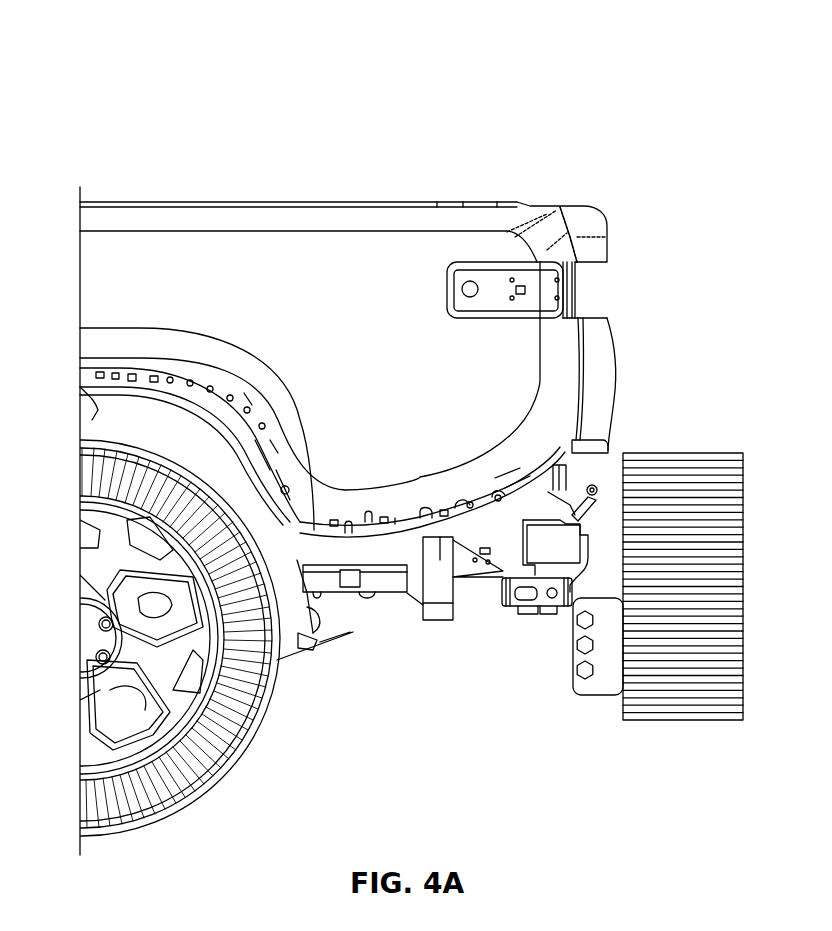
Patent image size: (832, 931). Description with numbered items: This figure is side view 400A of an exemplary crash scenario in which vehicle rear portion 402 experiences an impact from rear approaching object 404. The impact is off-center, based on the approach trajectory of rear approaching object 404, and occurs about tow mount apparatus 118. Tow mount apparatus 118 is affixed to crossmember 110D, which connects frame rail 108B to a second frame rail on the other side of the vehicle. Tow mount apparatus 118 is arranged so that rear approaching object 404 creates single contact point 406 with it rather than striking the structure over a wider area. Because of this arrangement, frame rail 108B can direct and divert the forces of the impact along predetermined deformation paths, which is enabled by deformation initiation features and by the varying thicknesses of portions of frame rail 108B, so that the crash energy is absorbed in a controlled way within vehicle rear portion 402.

The side view 400A is at (612, 66).
The vehicle rear portion 402 is at (78, 157).
The rear approaching object 404 is at (743, 620).
The single contact point 406 is at (575, 605).
The frame rail 108B is at (503, 571).
The tow mount apparatus 118 is at (540, 608).
The crossmember 110D is at (590, 550).